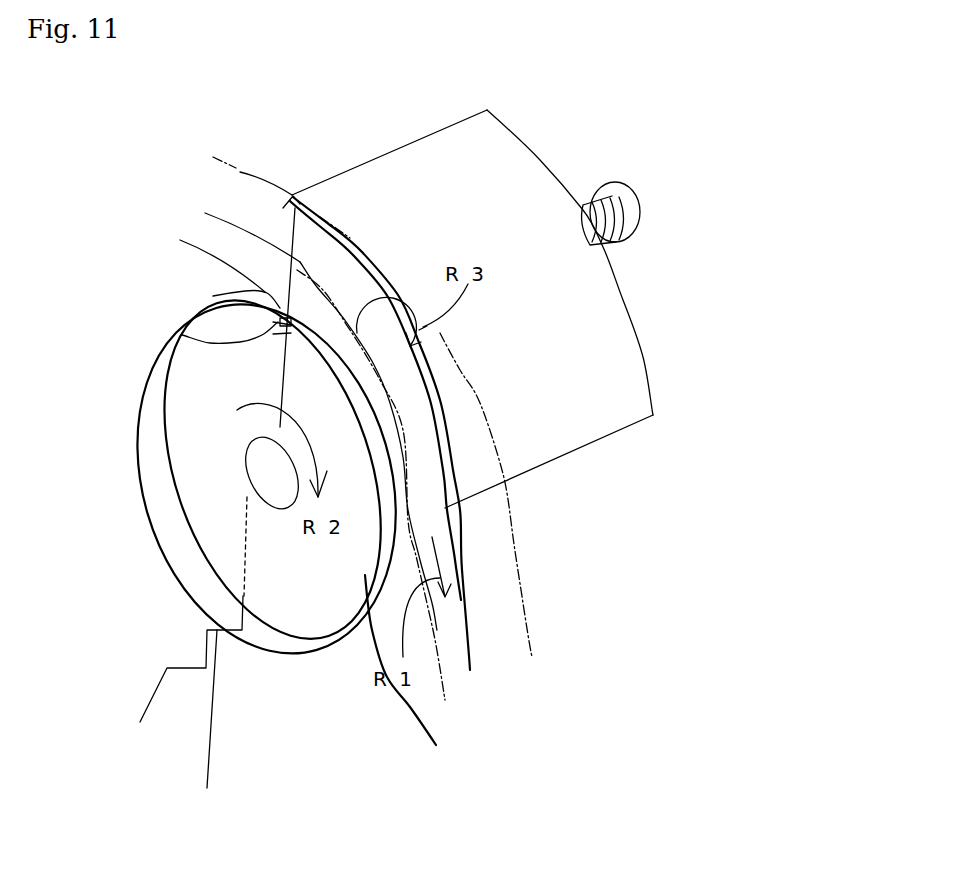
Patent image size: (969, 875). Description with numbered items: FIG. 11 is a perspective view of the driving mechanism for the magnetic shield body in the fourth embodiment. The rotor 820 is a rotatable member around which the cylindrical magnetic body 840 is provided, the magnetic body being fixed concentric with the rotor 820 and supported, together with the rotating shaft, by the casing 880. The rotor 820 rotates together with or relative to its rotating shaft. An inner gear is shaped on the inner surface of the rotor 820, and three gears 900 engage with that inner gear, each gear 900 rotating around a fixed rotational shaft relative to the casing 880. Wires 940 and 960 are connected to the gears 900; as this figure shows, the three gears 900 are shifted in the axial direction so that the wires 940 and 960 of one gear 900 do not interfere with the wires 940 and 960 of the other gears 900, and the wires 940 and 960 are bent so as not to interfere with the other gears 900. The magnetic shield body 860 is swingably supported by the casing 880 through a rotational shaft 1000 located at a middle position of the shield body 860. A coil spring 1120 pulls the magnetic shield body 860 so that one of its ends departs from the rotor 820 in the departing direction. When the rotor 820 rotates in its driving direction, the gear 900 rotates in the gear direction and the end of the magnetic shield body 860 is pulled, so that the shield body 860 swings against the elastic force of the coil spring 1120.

The rotor 820 is at (190, 250).
The cylindrical magnetic body 840 is at (230, 177).
The magnetic shield body 860 is at (557, 443).
The casing 880 is at (600, 173).
The gear 900 is at (173, 443).
The wire 940 is at (280, 267).
The wire 960 is at (207, 735).
The rotational shaft 1000 is at (603, 250).
The coil spring 1120 is at (607, 247).